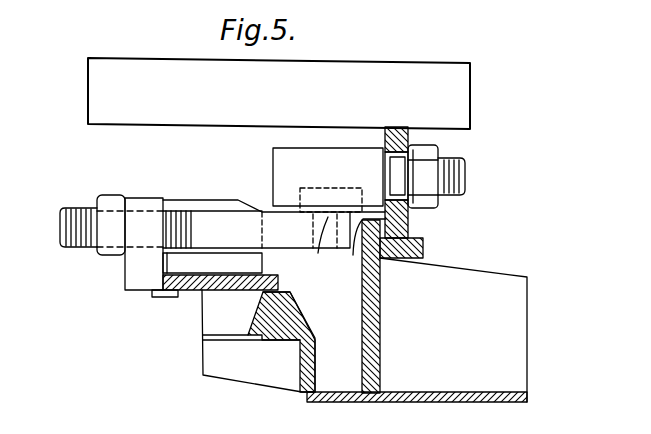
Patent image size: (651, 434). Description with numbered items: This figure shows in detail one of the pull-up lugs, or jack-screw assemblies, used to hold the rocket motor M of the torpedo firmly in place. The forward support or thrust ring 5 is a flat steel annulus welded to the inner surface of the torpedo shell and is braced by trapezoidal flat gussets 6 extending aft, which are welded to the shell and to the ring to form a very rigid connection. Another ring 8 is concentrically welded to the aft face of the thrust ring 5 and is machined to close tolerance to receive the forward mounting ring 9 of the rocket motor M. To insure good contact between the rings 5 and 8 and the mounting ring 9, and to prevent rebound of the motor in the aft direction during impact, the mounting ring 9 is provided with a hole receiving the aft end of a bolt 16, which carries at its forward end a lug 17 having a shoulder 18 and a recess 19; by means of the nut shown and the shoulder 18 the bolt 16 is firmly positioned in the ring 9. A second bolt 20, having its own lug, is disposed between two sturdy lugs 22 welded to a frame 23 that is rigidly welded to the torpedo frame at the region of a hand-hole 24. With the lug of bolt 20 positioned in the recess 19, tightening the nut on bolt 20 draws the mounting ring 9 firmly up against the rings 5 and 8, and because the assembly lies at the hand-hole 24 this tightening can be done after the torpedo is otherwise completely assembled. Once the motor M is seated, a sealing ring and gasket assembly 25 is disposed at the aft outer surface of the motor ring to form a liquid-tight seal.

The rocket motor M is at (389, 103).
The forward support or thrust ring 5 is at (381, 343).
The flat gussets 6 is at (480, 276).
The ring 8 is at (413, 258).
The forward mounting ring 9 is at (408, 223).
The bolt 16 is at (452, 163).
The lug 17 is at (274, 152).
The shoulder 18 is at (359, 248).
The recess 19 is at (323, 193).
The bolt 20 is at (72, 206).
The sturdy lugs 22 is at (192, 204).
The frame 23 is at (198, 293).
The hand-hole 24 is at (253, 374).
The sealing ring and gasket assembly 25 is at (313, 246).